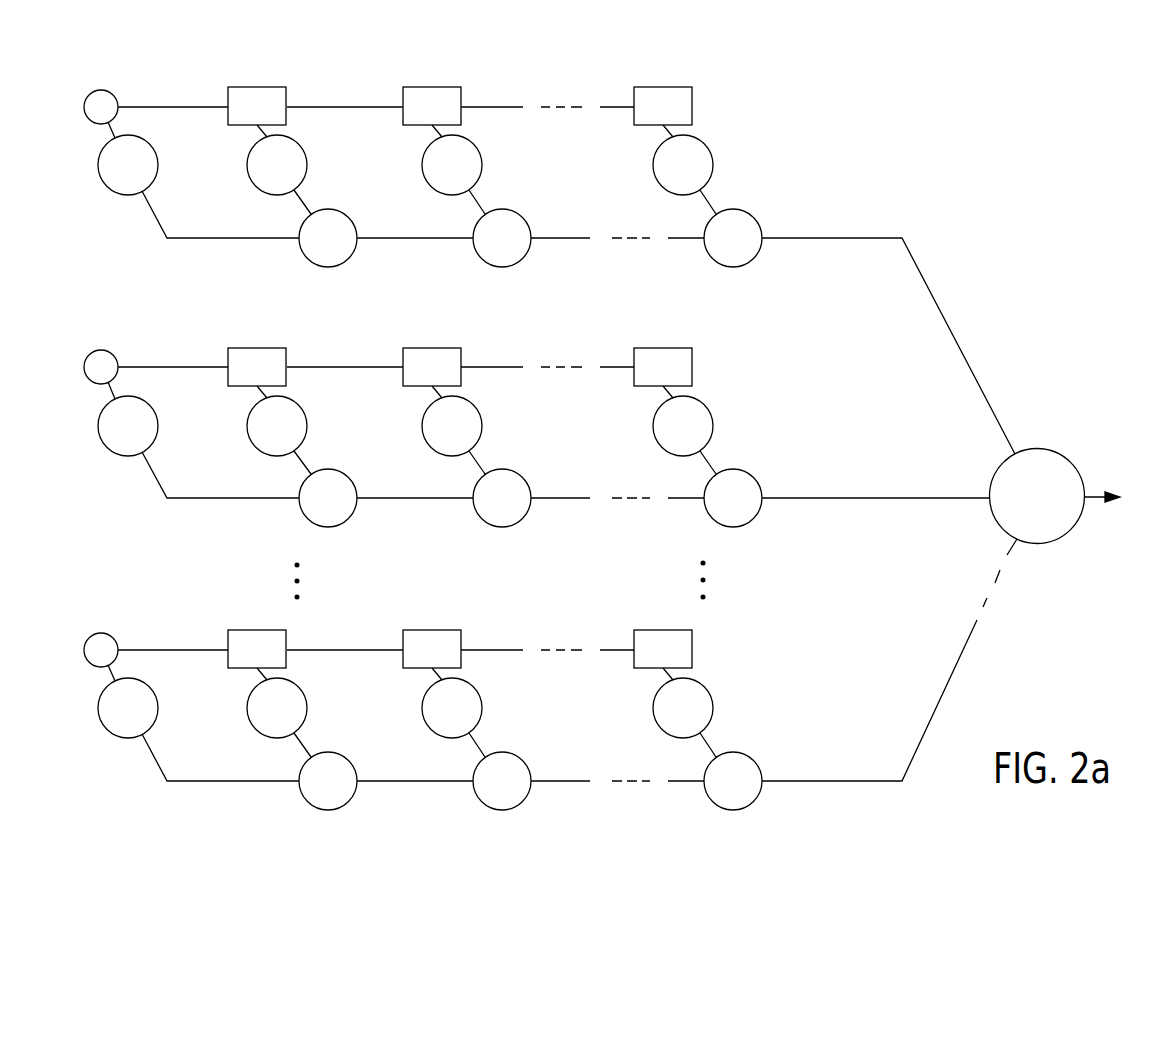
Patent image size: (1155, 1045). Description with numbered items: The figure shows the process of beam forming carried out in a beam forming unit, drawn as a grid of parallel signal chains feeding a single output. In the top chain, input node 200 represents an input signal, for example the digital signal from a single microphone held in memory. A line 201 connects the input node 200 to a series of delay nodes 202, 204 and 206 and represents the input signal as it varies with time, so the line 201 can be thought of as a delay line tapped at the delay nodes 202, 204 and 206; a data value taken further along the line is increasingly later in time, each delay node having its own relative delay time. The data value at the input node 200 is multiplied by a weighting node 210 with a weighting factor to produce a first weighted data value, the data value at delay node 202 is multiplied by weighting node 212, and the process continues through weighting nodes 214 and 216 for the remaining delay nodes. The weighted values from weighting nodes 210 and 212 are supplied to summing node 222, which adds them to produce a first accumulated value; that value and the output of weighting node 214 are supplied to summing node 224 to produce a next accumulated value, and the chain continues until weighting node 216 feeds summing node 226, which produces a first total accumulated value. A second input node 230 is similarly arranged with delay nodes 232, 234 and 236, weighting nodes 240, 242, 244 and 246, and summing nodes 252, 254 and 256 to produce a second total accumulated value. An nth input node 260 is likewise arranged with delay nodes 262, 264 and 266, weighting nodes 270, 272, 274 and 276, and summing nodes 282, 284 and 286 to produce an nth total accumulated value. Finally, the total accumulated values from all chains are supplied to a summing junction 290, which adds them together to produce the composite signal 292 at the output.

The input node 200 is at (101, 90).
The line 201 is at (177, 106).
The delay node 202 is at (257, 87).
The delay node 204 is at (432, 87).
The delay node 206 is at (663, 87).
The weighting node 210 is at (158, 163).
The weighting node 212 is at (307, 163).
The weighting node 214 is at (482, 163).
The weighting node 216 is at (713, 163).
The summing node 222 is at (330, 267).
The summing node 224 is at (504, 267).
The summing node 226 is at (735, 267).
The input node 230 is at (101, 350).
The delay node 232 is at (257, 348).
The delay node 234 is at (432, 348).
The delay node 236 is at (663, 348).
The weighting node 240 is at (158, 424).
The weighting node 242 is at (307, 424).
The weighting node 244 is at (482, 424).
The weighting node 246 is at (713, 424).
The summing node 252 is at (330, 527).
The summing node 254 is at (504, 527).
The summing node 256 is at (735, 527).
The input node 260 is at (101, 633).
The delay node 262 is at (257, 630).
The delay node 264 is at (432, 630).
The delay node 266 is at (663, 630).
The weighting node 270 is at (158, 706).
The weighting node 272 is at (307, 706).
The weighting node 274 is at (482, 706).
The weighting node 276 is at (713, 706).
The summing node 282 is at (330, 810).
The summing node 284 is at (504, 810).
The summing node 286 is at (735, 810).
The summing junction 290 is at (1037, 449).
The composite signal 292 is at (1107, 487).